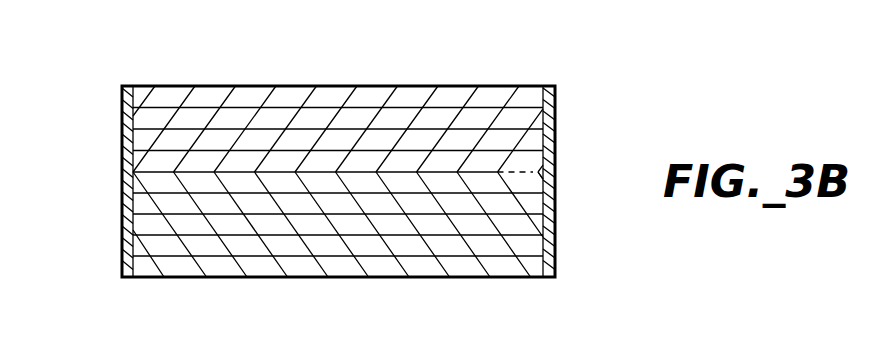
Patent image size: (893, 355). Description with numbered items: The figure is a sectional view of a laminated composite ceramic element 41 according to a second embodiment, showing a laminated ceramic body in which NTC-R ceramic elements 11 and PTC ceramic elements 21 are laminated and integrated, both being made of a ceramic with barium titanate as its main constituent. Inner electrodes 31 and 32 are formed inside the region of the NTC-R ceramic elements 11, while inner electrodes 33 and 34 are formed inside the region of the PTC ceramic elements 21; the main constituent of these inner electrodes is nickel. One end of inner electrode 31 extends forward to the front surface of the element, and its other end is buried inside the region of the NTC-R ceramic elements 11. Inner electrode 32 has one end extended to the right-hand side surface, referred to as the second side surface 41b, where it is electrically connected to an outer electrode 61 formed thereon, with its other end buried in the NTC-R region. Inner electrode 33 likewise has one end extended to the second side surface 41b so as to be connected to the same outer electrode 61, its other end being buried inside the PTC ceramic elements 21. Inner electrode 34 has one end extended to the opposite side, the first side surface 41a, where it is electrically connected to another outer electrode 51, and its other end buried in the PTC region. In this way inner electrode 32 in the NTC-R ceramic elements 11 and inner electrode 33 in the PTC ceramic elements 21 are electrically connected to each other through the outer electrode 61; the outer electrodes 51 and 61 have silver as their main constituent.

The NTC-R ceramic elements 11 is at (155, 165).
The PTC ceramic elements 21 is at (498, 183).
The inner electrode 31 is at (395, 107).
The inner electrode 32 is at (306, 150).
The inner electrode 33 is at (240, 193).
The inner electrode 34 is at (310, 237).
The laminated composite ceramic element 41 is at (478, 63).
The first side surface 41a is at (122, 252).
The second side surface 41b is at (550, 255).
The outer electrode 51 is at (122, 187).
The outer electrode 61 is at (552, 173).